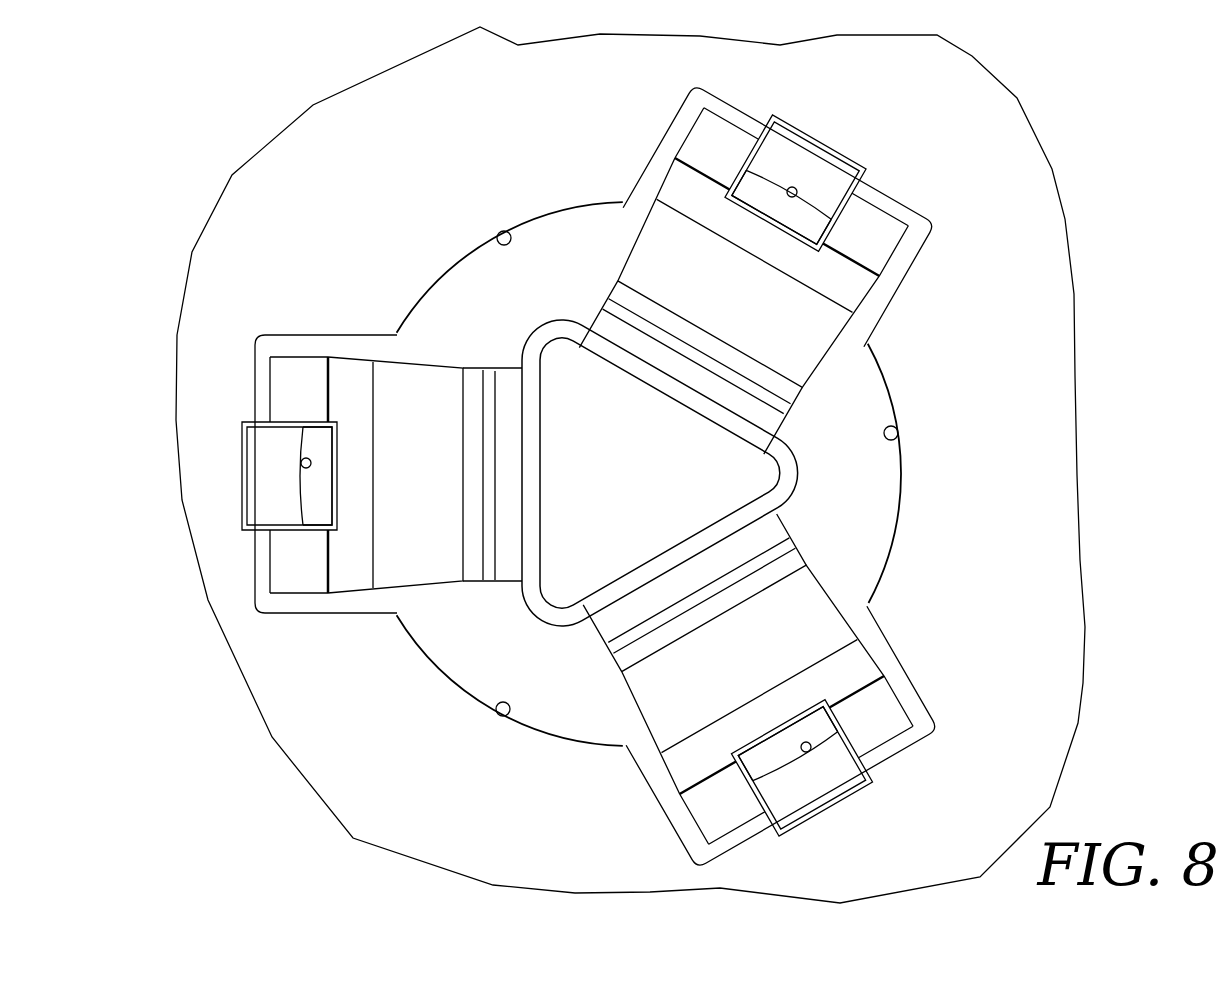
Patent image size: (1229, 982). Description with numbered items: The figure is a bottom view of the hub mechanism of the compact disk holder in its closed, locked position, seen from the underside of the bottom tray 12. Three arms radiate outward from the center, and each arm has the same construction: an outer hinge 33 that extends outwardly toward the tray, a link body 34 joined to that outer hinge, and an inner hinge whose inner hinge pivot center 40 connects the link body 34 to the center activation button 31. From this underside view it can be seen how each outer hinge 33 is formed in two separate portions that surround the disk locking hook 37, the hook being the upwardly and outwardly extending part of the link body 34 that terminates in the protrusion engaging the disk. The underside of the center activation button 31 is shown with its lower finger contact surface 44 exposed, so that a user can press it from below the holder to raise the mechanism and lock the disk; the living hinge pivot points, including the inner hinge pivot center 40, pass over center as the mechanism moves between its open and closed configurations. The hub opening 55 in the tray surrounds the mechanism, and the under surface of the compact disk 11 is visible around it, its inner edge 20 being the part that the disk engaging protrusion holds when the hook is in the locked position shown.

The compact disk 11 is at (287, 340).
The bottom tray 12 is at (1054, 426).
The inner edge of CD 20 is at (301, 463).
The center activation button 31 is at (568, 572).
The outer hinge 33 is at (268, 388).
The link body 34 is at (407, 493).
The disk locking hook 37 is at (330, 477).
The inner hinge pivot center 40 is at (788, 546).
The lower finger contact surface 44 is at (610, 490).
The hub opening 55 is at (508, 232).